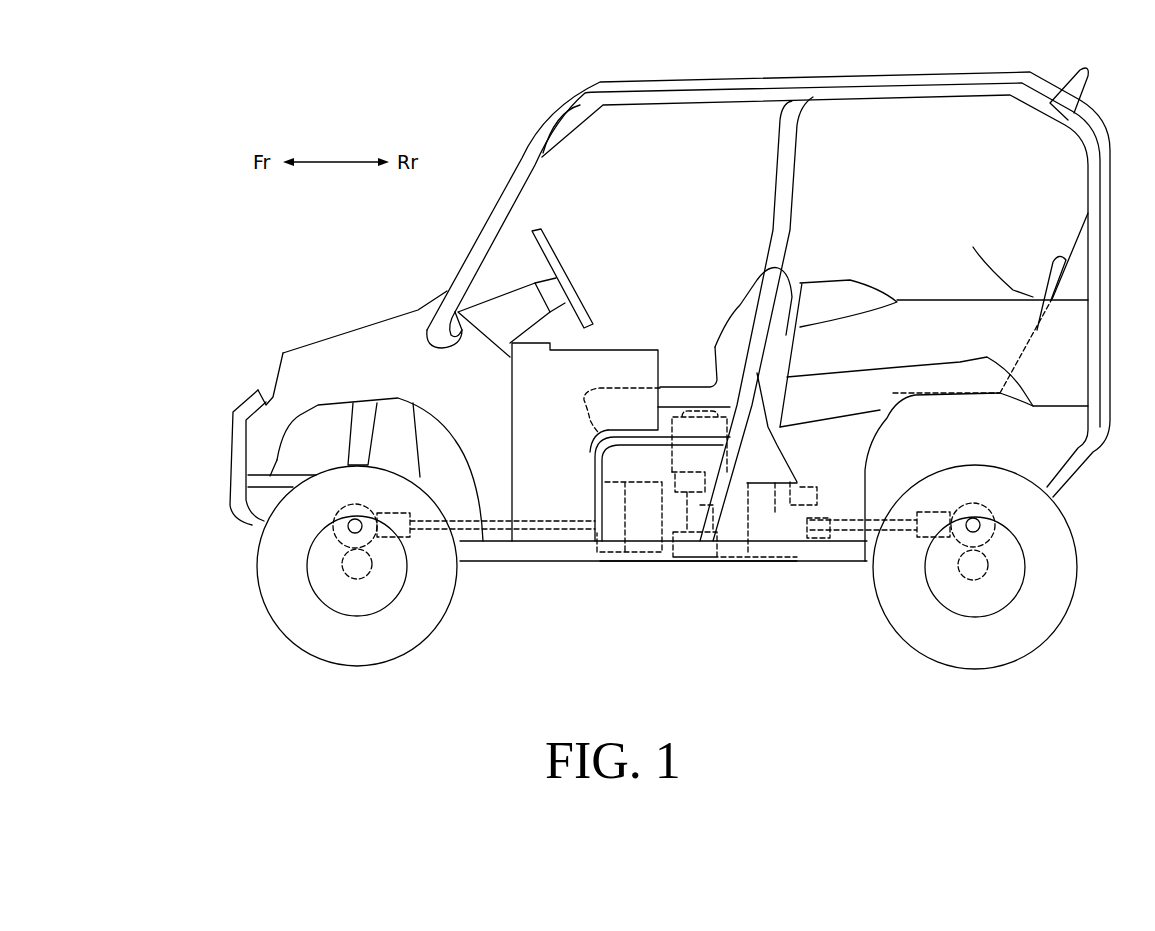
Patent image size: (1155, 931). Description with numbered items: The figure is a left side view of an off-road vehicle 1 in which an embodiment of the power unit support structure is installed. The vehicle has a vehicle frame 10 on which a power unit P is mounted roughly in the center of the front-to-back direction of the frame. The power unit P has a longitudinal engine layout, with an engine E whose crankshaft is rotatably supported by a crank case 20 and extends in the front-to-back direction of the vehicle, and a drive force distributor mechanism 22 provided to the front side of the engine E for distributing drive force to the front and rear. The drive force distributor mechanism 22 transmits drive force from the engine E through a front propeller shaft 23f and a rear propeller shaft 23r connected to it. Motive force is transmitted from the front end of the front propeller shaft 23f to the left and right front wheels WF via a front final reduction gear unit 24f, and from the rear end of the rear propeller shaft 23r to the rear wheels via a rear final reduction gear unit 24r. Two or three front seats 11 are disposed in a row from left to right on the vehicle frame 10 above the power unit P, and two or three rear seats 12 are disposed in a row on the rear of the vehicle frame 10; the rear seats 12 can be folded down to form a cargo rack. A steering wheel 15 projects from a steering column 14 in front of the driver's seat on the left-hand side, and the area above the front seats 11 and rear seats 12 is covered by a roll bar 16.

The off-road vehicle 1 is at (496, 162).
The vehicle frame 10 is at (638, 563).
The front seats 11 is at (605, 388).
The rear seats 12 is at (943, 397).
The steering column 14 is at (505, 292).
The steering wheel 15 is at (556, 258).
The roll bar 16 is at (773, 80).
The crank case 20 is at (737, 530).
The drive force distributor mechanism 22 is at (617, 528).
The front propeller shaft 23f is at (508, 532).
The rear propeller shaft 23r is at (805, 537).
The front final reduction gear unit 24f is at (377, 533).
The rear final reduction gear unit 24r is at (953, 518).
The engine E is at (663, 453).
The power unit P is at (695, 564).
The front wheels WF is at (1117, 557).